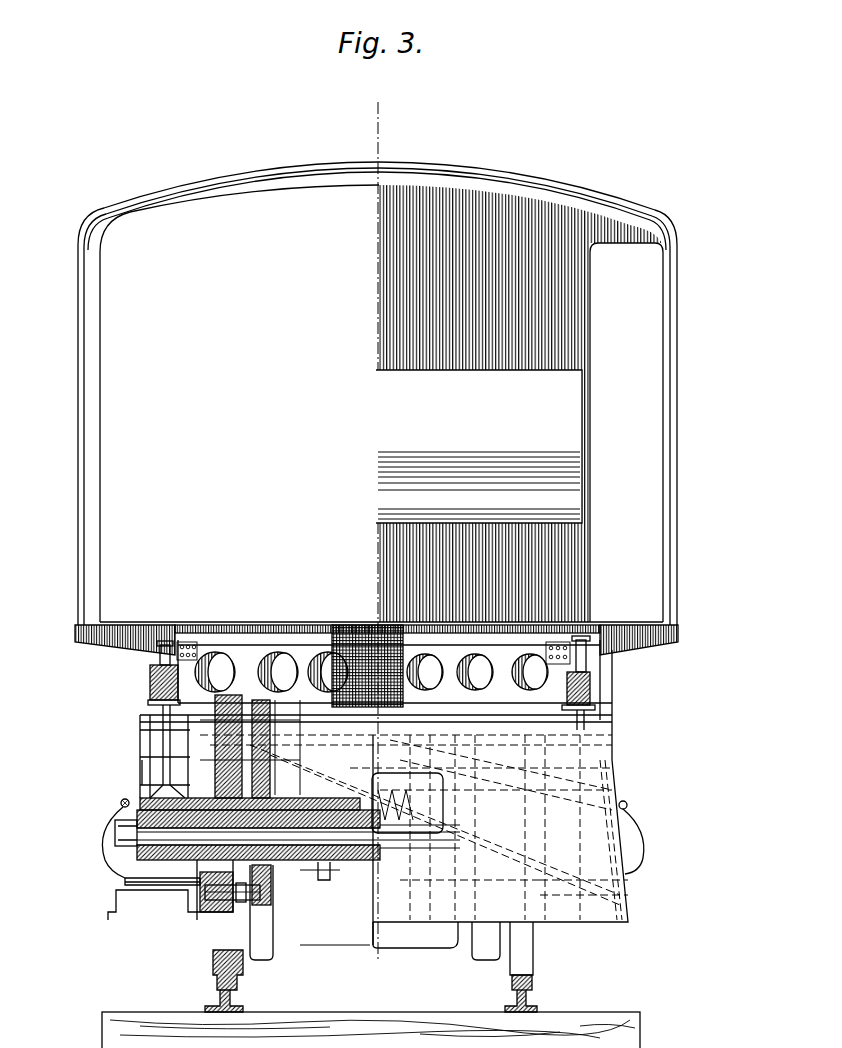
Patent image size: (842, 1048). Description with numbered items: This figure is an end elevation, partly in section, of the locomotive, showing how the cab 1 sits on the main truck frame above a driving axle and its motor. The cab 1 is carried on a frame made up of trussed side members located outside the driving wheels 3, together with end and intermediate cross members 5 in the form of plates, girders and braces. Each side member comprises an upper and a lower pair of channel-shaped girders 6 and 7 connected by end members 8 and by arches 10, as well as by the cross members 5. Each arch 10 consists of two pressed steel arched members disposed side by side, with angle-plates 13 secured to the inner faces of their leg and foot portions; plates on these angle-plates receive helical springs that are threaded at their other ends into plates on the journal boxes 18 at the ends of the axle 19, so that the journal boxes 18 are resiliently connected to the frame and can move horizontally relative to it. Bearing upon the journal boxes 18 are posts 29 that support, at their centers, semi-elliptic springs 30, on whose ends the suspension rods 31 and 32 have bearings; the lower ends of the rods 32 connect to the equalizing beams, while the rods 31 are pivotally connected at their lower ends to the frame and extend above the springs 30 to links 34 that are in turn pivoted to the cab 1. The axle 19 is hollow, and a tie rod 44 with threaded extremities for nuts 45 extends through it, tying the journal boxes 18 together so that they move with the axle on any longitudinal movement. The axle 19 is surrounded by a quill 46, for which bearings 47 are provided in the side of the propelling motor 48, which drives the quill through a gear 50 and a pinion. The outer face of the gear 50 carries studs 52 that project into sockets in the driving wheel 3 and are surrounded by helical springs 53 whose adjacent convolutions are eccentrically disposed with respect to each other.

The cab 1 is at (377, 393).
The driving wheel 3 is at (243, 965).
The cross member 5 is at (612, 731).
The upper channel-shaped girder 6 is at (142, 733).
The lower channel-shaped girder 7 is at (166, 918).
The end member 8 is at (590, 790).
The arch 10 is at (146, 769).
The angle-plate 13 is at (130, 883).
The journal box 18 is at (115, 872).
The axle 19 is at (166, 862).
The post 29 is at (165, 746).
The semi-elliptic spring 30 is at (150, 685).
The suspension rod 31 is at (585, 712).
The suspension rod 32 is at (160, 660).
The link 34 is at (586, 645).
The tie rod 44 is at (118, 845).
The nut 45 is at (125, 826).
The quill 46 is at (358, 868).
The bearing 47 is at (322, 878).
The propelling motor 48 is at (335, 907).
The gear 50 is at (273, 938).
The stud 52 is at (215, 897).
The helical spring 53 is at (238, 905).